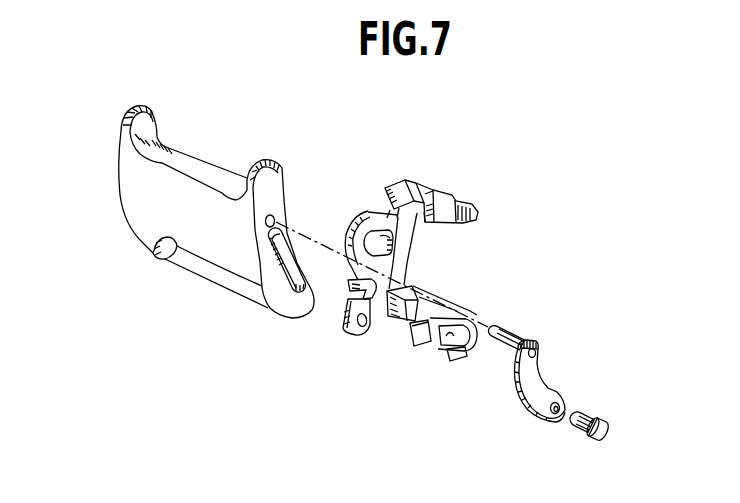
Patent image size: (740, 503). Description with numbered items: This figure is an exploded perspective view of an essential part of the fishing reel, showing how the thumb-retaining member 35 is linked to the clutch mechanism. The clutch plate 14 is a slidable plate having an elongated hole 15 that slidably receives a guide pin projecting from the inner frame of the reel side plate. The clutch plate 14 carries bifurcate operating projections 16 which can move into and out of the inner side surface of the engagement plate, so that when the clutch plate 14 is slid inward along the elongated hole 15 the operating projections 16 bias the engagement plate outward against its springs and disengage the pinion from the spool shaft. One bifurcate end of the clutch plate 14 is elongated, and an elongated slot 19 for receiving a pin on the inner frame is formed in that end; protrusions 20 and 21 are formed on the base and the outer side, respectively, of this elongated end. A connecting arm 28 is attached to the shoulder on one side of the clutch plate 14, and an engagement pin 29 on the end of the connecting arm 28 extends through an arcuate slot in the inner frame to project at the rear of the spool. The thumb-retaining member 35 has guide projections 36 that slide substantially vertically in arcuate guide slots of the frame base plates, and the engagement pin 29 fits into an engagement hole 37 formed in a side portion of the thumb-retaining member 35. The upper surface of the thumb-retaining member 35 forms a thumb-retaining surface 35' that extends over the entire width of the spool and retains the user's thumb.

The clutch plate 14 is at (409, 218).
The elongated hole 15 is at (377, 237).
The operating projections 16 is at (478, 219).
The elongated slot 19 is at (457, 361).
The protrusion 20 is at (415, 347).
The protrusion 21 is at (466, 351).
The connecting arm 28 is at (535, 382).
The engagement pin 29 is at (510, 334).
The thumb-retaining member 35 is at (216, 212).
The thumb-retaining surface 35' is at (206, 150).
The guide projections 36 is at (285, 288).
The engagement hole 37 is at (276, 221).